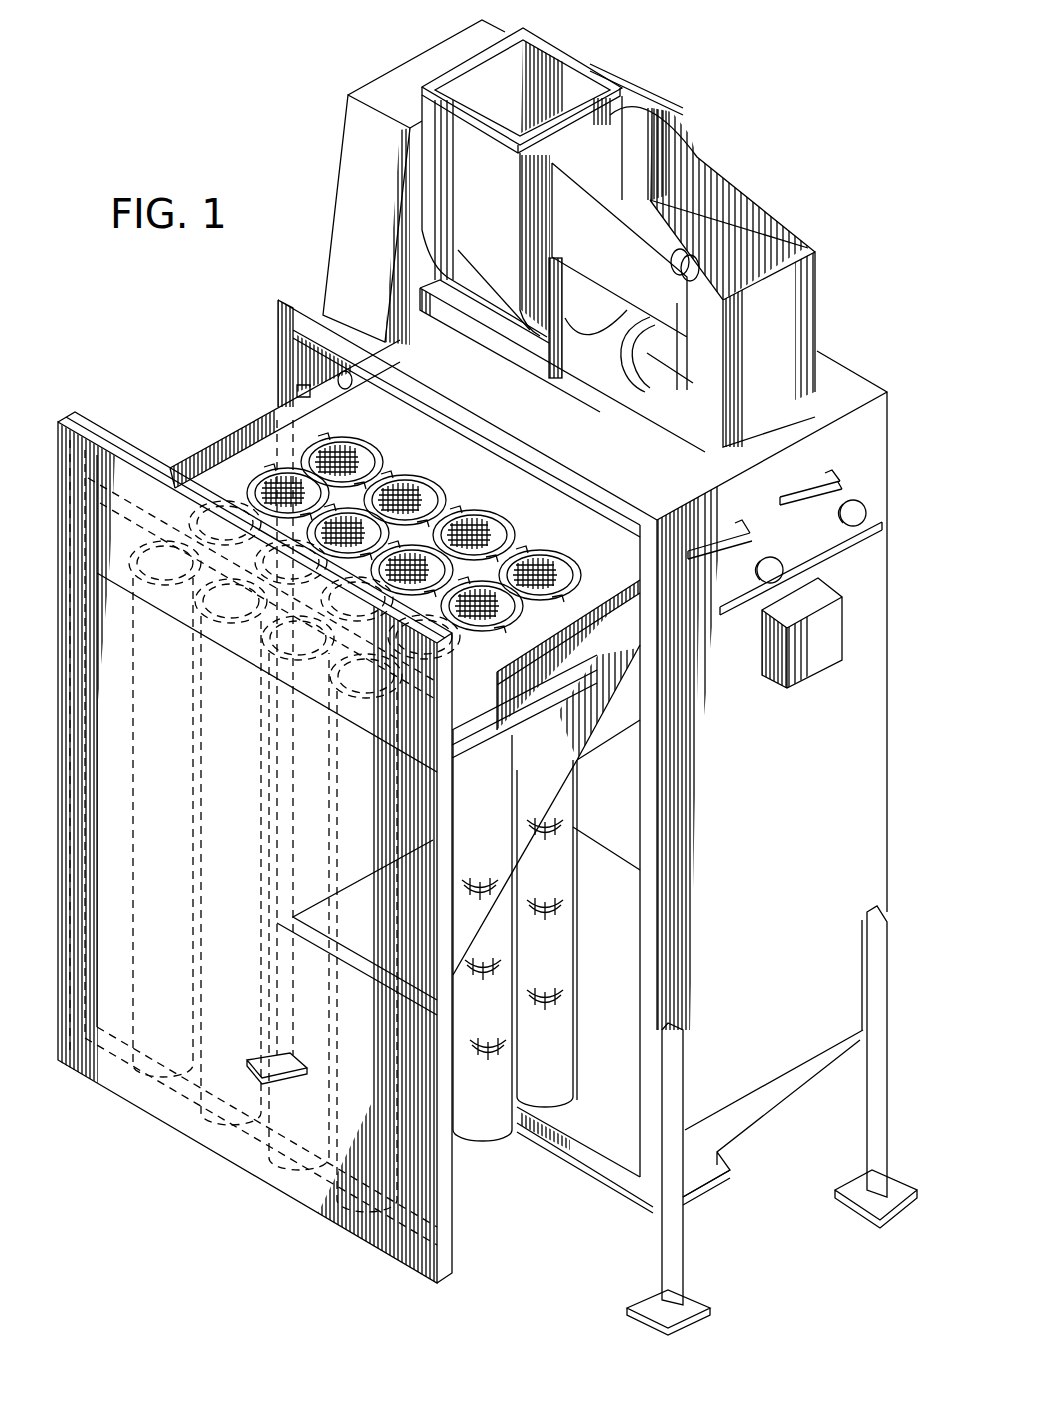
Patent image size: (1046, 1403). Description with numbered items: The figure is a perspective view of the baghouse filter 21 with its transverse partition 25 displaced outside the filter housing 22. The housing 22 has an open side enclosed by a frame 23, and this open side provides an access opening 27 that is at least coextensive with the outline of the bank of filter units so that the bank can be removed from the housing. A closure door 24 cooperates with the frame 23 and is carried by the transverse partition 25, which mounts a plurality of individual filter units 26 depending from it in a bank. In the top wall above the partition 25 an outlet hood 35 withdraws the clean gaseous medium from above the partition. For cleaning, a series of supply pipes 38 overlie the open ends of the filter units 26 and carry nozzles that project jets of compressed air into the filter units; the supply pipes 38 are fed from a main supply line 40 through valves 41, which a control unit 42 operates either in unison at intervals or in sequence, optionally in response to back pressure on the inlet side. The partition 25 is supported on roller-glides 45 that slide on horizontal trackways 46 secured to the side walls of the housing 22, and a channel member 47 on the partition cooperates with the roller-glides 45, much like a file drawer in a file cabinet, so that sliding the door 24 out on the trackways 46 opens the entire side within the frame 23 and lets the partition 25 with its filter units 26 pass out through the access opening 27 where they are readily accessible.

The baghouse filter 21 is at (850, 390).
The filter housing 22 is at (735, 1068).
The frame 23 is at (283, 310).
The closure door 24 is at (97, 437).
The transverse partition 25 is at (241, 455).
The filter units 26 is at (380, 448).
The access opening 27 is at (607, 958).
The outlet hood 35 is at (348, 200).
The supply pipes 38 is at (843, 481).
The main supply line 40 is at (830, 550).
The valves 41 is at (862, 513).
The control unit 42 is at (833, 620).
The roller-glides 45 is at (197, 462).
The trackways 46 is at (313, 380).
The channel member 47 is at (483, 737).